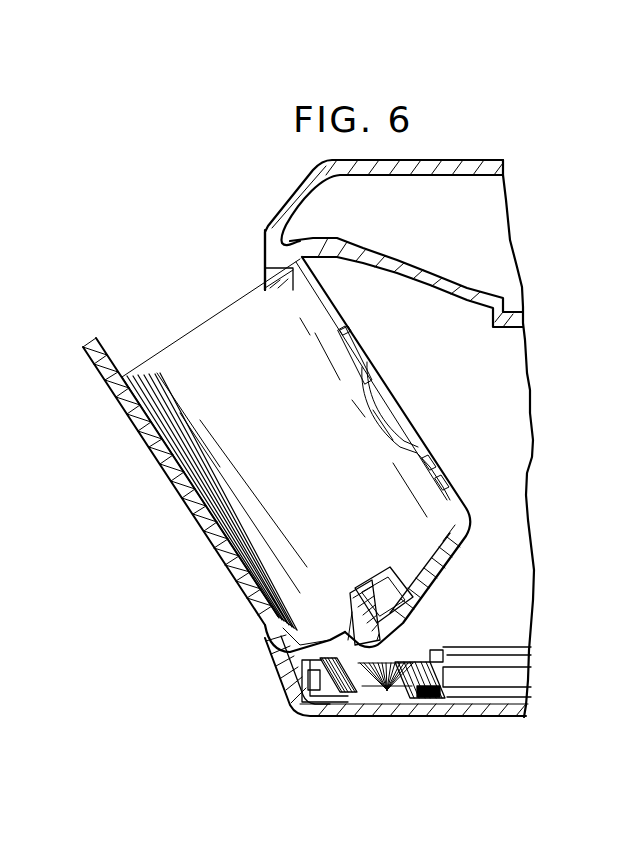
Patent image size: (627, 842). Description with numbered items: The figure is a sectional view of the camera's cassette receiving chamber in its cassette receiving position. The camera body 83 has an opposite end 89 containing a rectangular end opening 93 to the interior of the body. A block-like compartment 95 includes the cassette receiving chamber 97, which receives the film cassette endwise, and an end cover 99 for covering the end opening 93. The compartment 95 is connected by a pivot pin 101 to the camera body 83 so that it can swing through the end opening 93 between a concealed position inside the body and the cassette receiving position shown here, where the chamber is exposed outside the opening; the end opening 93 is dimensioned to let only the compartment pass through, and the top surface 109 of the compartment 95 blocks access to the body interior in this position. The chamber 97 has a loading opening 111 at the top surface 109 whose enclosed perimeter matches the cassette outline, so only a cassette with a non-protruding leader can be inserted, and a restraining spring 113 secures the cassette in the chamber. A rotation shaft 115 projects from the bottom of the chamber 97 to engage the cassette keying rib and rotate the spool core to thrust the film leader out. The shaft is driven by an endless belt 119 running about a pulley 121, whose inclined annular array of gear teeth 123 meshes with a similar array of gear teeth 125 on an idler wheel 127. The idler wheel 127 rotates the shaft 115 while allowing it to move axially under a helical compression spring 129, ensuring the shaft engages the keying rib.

The camera body 83 is at (450, 158).
The opposite end 89 is at (264, 243).
The end opening 93 is at (264, 285).
The compartment 95 is at (187, 515).
The cassette receiving chamber 97 is at (218, 340).
The end cover 99 is at (184, 495).
The pivot pin 101 is at (275, 632).
The top surface 109 is at (226, 320).
The loading opening 111 is at (207, 365).
The restraining spring 113 is at (368, 403).
The rotation shaft 115 is at (385, 575).
The endless belt 119 is at (310, 680).
The pulley 121 is at (425, 687).
The gear teeth 123 is at (367, 653).
The gear teeth 125 is at (350, 612).
The idler wheel 127 is at (352, 612).
The helical compression spring 129 is at (423, 607).